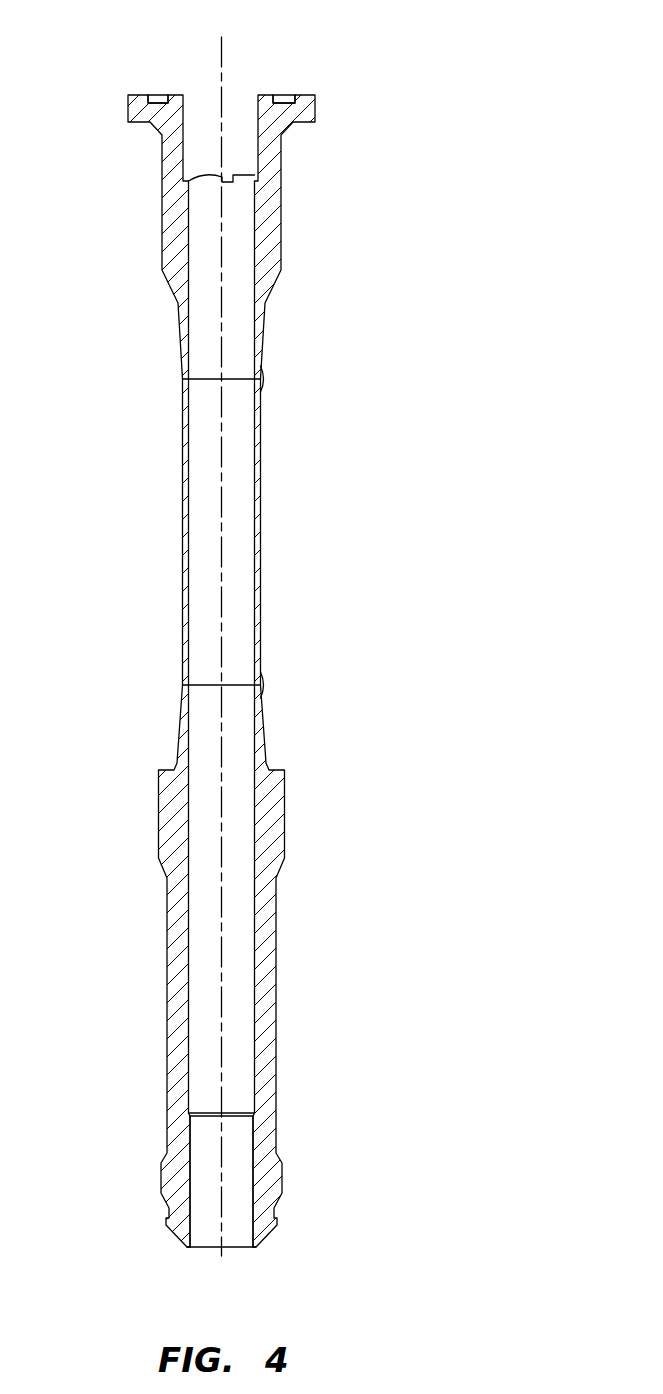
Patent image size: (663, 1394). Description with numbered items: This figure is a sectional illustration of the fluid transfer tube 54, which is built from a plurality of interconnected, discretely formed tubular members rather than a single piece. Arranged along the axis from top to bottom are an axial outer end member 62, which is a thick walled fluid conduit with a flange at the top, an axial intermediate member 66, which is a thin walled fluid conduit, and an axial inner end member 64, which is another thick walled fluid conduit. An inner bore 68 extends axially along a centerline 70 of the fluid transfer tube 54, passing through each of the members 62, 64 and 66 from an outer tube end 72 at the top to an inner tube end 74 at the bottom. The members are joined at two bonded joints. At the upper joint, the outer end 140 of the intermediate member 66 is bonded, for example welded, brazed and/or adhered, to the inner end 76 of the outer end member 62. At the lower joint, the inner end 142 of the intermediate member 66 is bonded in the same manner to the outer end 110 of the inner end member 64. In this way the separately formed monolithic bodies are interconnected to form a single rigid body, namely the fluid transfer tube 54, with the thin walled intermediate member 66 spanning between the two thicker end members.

The fluid transfer tube 54 is at (404, 151).
The axial outer end member 62 is at (150, 229).
The axial inner end member 64 is at (140, 802).
The axial intermediate member 66 is at (160, 505).
The inner bore 68 is at (207, 1214).
The centerline 70 is at (217, 42).
The outer tube end 72 is at (268, 94).
The inner tube end 74 is at (255, 1247).
The inner end of the outer end member 76 is at (262, 388).
The outer end of the inner end member 110 is at (262, 672).
The outer end of the intermediate member 140 is at (262, 364).
The inner end of the intermediate member 142 is at (262, 695).